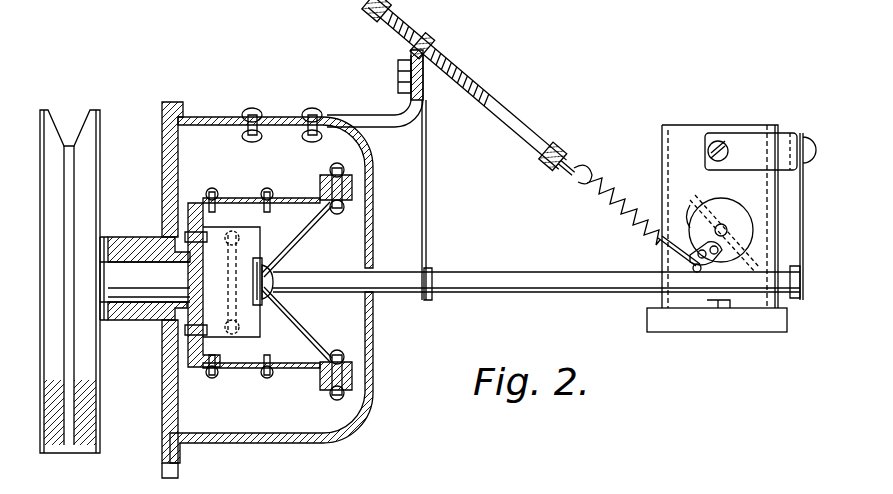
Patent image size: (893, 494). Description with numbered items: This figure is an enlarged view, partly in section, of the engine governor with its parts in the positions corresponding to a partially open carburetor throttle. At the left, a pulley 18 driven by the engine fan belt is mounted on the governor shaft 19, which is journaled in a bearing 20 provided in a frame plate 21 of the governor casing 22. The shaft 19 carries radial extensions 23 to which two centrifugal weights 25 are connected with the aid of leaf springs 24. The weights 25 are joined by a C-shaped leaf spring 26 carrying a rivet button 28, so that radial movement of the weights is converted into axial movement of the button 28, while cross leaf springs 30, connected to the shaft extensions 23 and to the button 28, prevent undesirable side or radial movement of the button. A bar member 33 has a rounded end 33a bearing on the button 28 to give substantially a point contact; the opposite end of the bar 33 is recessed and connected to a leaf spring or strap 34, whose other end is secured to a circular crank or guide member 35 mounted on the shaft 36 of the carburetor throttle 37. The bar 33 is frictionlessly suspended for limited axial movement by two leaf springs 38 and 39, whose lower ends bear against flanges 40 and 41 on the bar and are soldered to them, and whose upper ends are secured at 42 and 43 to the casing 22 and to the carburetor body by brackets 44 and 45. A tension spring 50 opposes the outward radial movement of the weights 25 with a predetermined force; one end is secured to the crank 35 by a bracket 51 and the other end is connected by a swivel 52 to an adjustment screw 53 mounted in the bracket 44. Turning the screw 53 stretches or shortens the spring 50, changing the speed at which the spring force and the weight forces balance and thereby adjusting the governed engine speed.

The pulley 18 is at (86, 132).
The governor shaft 19 is at (143, 297).
The bearing 20 is at (133, 253).
The frame plate 21 is at (166, 421).
The governor casing 22 is at (292, 438).
The radial extensions 23 is at (187, 205).
The leaf springs 24 is at (238, 200).
The centrifugal weights 25 is at (342, 187).
The C-shaped leaf spring 26 is at (291, 233).
The rivet button 28 is at (270, 298).
The cross leaf springs 30 is at (203, 237).
The bar member 33 is at (528, 280).
The rounded end 33a is at (277, 277).
The leaf spring or strap 34 is at (687, 225).
The crank or guide member 35 is at (692, 210).
The shaft of the carburetor throttle 36 is at (722, 226).
The carburetor throttle 37 is at (688, 190).
The leaf spring 38 is at (427, 171).
The leaf spring 39 is at (800, 284).
The flange 40 is at (428, 303).
The flange 41 is at (787, 312).
The securing point 42 is at (428, 88).
The securing point 43 is at (804, 133).
The bracket 44 is at (373, 123).
The bracket 45 is at (758, 143).
The tension spring 50 is at (604, 212).
The bracket 51 is at (667, 280).
The swivel 52 is at (574, 148).
The adjustment screw 53 is at (400, 18).